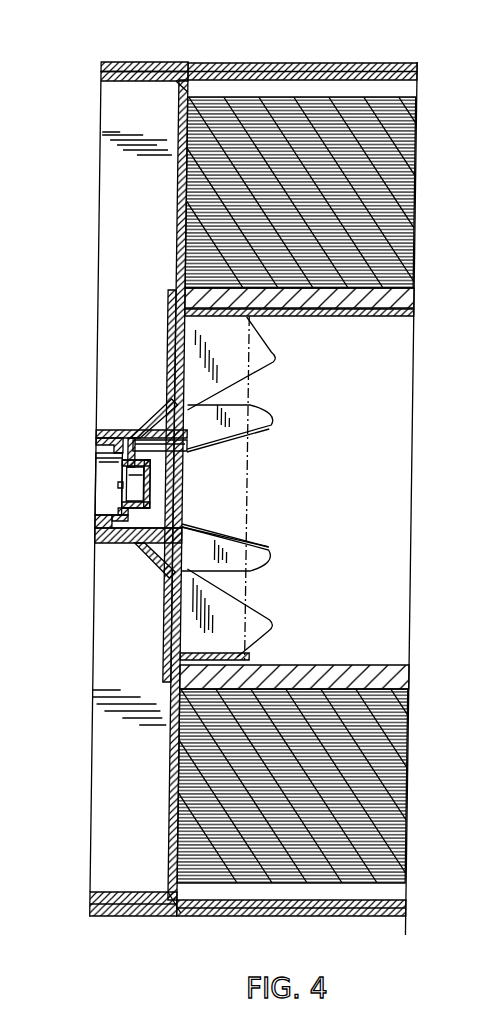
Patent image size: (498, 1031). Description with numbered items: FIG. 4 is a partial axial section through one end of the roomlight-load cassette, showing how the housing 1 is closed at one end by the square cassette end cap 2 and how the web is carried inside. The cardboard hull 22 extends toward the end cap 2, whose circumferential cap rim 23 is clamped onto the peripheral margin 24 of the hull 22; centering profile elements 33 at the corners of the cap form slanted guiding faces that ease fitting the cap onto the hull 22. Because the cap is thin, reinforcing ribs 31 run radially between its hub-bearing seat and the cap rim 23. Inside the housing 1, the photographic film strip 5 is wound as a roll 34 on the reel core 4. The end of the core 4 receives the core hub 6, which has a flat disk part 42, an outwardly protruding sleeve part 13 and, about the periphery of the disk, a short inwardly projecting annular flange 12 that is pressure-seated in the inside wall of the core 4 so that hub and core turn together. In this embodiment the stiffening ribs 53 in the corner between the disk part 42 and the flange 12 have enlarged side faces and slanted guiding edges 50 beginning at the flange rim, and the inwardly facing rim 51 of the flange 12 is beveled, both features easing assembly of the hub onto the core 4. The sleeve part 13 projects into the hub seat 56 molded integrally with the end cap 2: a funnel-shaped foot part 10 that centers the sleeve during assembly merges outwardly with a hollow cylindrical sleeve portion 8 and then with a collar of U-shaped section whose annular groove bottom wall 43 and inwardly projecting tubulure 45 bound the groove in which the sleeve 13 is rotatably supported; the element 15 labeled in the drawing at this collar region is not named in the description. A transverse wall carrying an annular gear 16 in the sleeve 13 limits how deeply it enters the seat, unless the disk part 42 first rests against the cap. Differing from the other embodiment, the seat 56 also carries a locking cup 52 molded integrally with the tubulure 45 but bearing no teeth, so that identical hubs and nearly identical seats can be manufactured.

The housing 1 is at (234, 56).
The cassette end cap 2 is at (128, 196).
The reel core 4 is at (352, 672).
The film strip 5 is at (384, 700).
The core hub 6 is at (167, 421).
The sleeve portion 8 is at (106, 546).
The foot part 10 is at (160, 566).
The annular flange 12 is at (226, 650).
The sleeve part 13 is at (178, 532).
The upper bearing plate 15 is at (116, 431).
The annular gear 16 is at (174, 453).
The hull 22 is at (356, 63).
The cap rim 23 is at (133, 61).
The peripheral margin 24 is at (118, 61).
The reinforcing ribs 31 is at (125, 251).
The centering profile elements 33 is at (238, 102).
The roll 34 is at (272, 92).
The flat disk part 42 is at (181, 323).
The groove bottom wall 43 is at (104, 447).
The tubulure 45 is at (111, 520).
The guiding edges 50 is at (277, 340).
The inwardly facing rim 51 is at (252, 318).
The locking cup 52 is at (158, 486).
The stiffening ribs 53 is at (268, 427).
The hub seat 56 is at (130, 550).